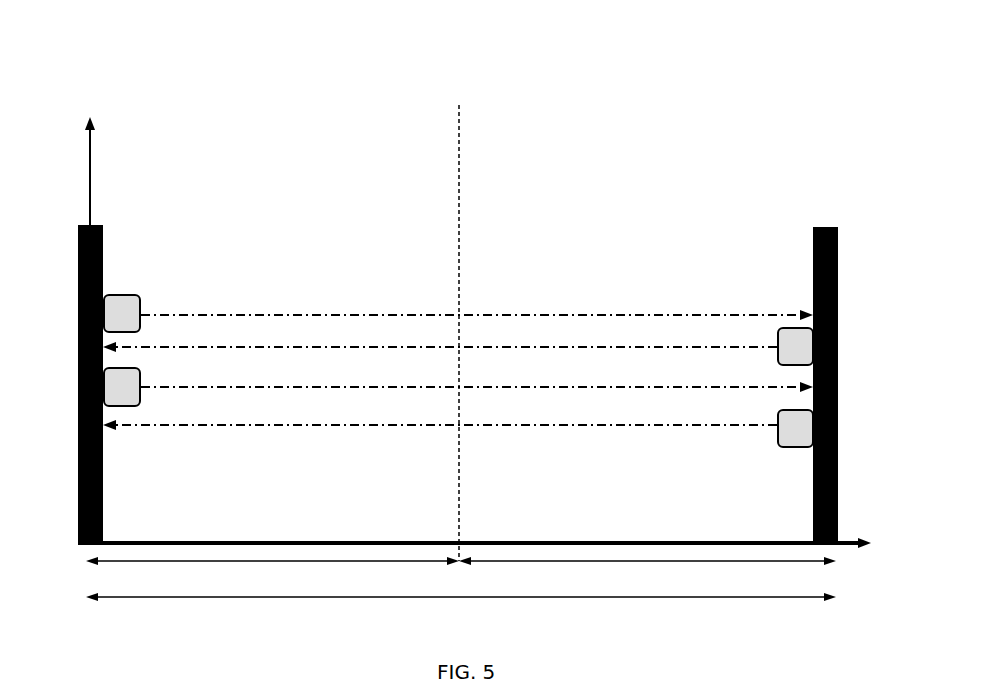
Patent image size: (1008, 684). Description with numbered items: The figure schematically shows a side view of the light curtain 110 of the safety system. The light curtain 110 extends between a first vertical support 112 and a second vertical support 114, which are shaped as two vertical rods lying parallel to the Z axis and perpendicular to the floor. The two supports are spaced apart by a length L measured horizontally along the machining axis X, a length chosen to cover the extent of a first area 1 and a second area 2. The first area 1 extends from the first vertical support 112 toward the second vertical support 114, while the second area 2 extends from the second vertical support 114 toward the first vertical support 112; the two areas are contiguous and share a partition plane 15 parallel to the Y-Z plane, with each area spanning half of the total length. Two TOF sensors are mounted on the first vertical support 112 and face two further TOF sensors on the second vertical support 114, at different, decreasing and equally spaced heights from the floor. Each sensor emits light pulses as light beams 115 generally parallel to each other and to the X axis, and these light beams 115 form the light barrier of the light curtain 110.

The light curtain 110 is at (207, 82).
The first vertical support 112 is at (78, 268).
The second vertical support 114 is at (838, 295).
The light beams 115 is at (197, 315).
The partition plane 15 is at (459, 168).
The first area 1 is at (430, 161).
The second area 2 is at (783, 161).